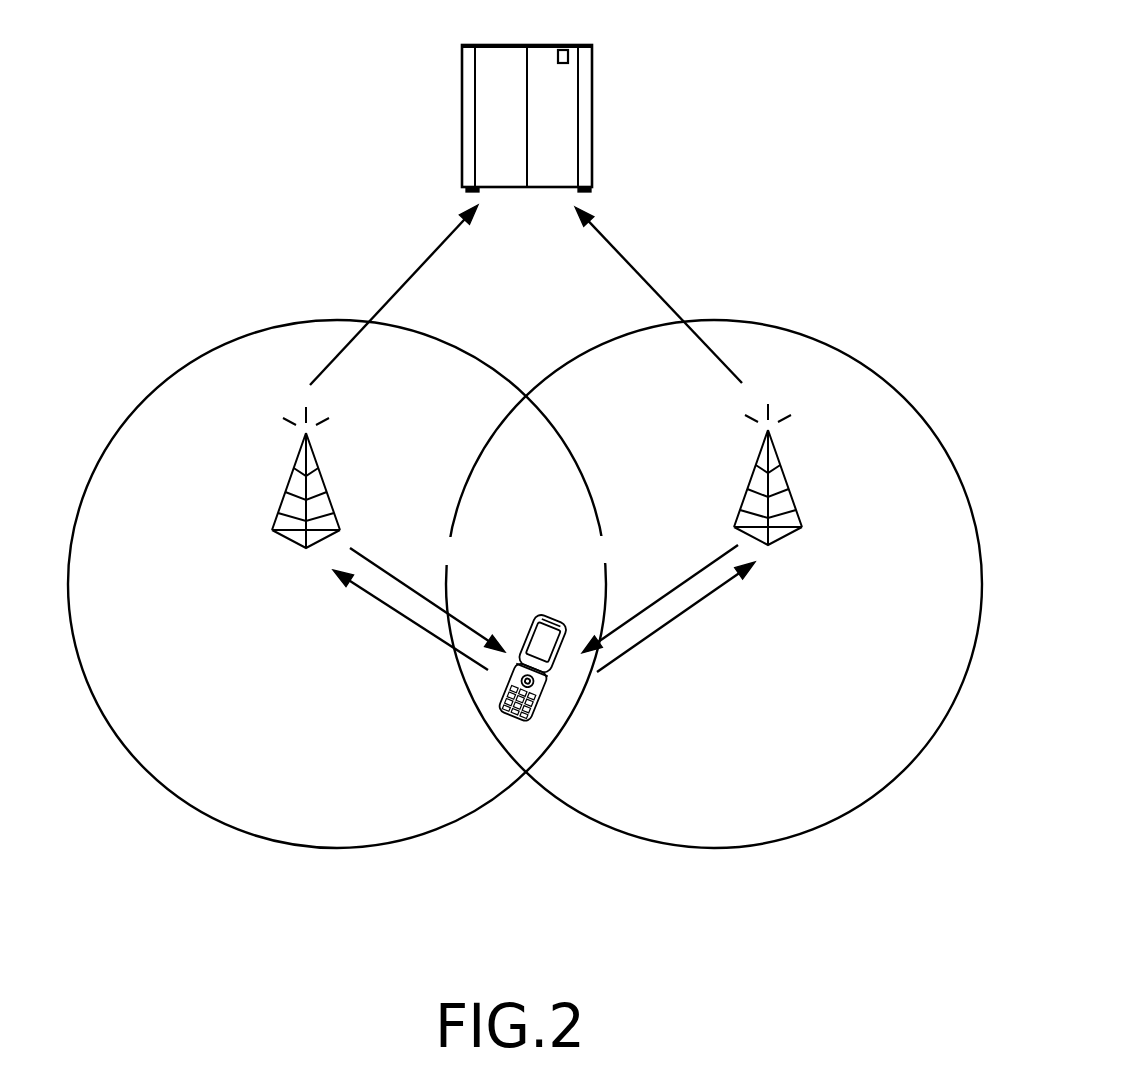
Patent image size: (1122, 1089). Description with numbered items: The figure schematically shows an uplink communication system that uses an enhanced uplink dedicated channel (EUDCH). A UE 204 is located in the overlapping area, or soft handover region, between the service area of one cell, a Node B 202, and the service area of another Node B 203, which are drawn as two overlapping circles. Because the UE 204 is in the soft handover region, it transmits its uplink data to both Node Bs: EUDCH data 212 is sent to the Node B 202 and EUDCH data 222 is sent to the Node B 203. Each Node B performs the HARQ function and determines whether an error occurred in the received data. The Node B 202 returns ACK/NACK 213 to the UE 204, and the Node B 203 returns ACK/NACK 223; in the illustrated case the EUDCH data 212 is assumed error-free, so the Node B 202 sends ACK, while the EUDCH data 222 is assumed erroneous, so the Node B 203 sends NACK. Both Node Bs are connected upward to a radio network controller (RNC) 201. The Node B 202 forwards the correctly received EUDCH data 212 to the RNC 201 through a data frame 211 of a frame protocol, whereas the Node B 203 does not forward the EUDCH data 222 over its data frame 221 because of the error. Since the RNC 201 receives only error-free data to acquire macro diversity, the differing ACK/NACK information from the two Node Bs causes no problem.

The radio network controller (RNC) 201 is at (563, 44).
The Node B 202 is at (280, 408).
The Node B 203 is at (780, 408).
The UE 204 is at (510, 718).
The data frame 211 is at (435, 248).
The EUDCH data 212 is at (252, 642).
The ACK/NACK 213 is at (428, 532).
The data frame 221 is at (615, 250).
The EUDCH data 222 is at (832, 642).
The ACK/NACK 223 is at (645, 532).